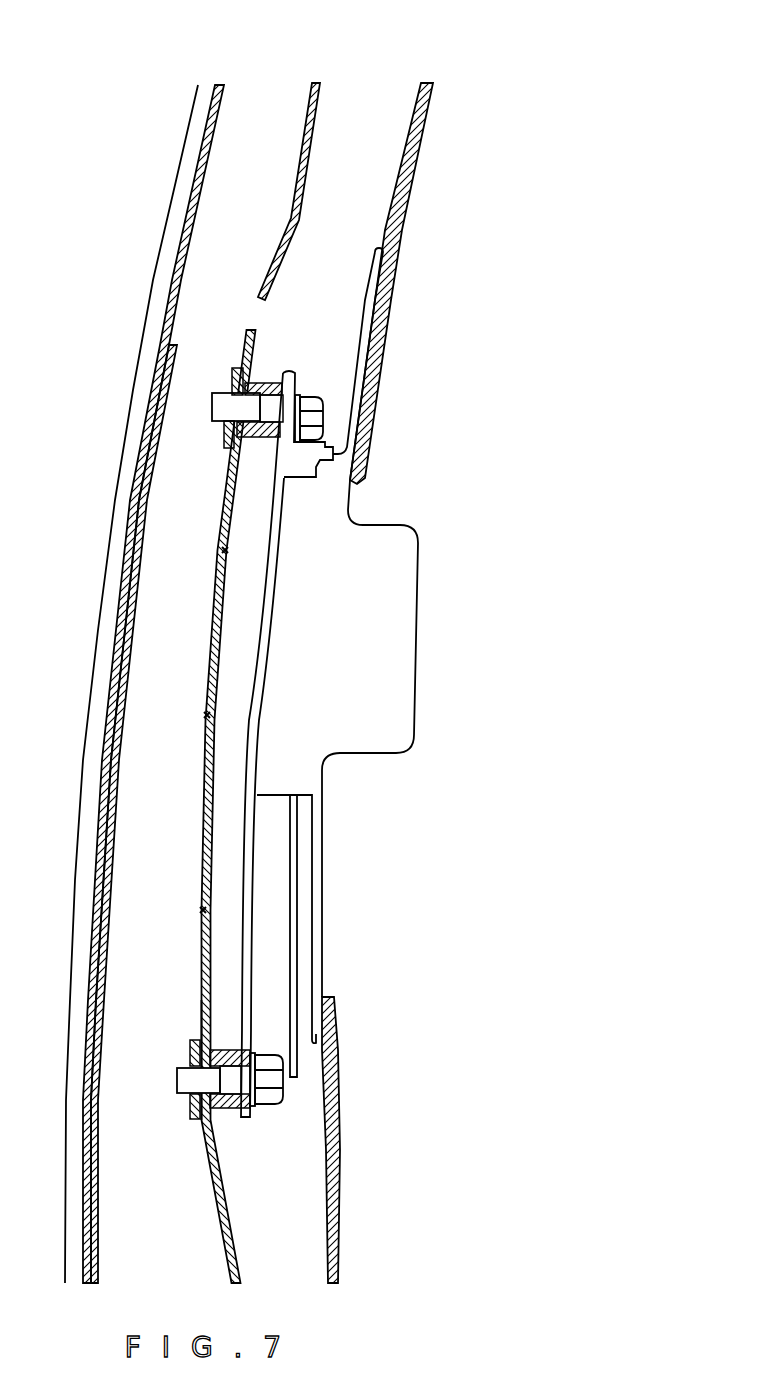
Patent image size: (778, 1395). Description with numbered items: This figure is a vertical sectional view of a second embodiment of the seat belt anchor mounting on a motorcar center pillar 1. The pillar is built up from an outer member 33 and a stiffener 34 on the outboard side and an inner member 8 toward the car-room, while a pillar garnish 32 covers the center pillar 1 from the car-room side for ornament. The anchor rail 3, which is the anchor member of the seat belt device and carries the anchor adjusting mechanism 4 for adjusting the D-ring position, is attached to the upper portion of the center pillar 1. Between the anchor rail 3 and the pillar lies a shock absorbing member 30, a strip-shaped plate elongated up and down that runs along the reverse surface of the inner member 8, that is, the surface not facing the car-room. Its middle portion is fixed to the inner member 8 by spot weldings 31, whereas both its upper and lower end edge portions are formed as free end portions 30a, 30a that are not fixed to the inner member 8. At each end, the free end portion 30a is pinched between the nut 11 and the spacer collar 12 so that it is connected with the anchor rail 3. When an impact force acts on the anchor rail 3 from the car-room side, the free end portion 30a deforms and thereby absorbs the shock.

The center pillar 1 is at (277, 65).
The anchor rail 3 is at (273, 910).
The anchor adjusting mechanism 4 is at (418, 570).
The inner member 8 is at (300, 203).
The nut 11 is at (233, 380).
The spacer collar 12 is at (268, 382).
The shock absorbing member 30 is at (214, 592).
The free end portion 30a is at (243, 350).
The spot welding 31 is at (225, 550).
The pillar garnish 32 is at (414, 165).
The outer member 33 is at (188, 222).
The stiffener 34 is at (153, 447).